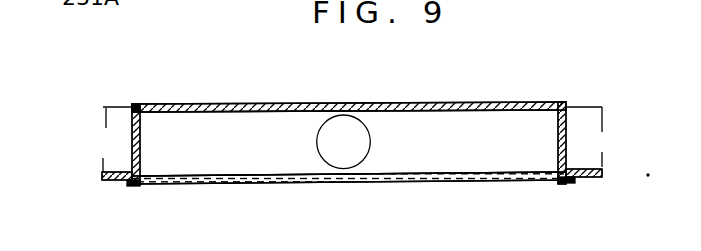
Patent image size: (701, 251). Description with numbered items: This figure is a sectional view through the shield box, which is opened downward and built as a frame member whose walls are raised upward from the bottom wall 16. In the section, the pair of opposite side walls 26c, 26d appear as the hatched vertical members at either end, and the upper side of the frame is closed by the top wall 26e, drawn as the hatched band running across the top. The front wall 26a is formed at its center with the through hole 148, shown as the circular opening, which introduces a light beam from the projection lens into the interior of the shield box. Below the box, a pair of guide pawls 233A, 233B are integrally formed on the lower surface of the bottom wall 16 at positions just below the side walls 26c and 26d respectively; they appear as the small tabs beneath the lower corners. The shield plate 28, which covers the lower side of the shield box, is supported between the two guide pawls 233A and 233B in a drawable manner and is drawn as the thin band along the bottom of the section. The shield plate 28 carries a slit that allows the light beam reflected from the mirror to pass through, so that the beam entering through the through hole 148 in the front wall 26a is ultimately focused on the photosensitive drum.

The front wall 26a is at (178, 126).
The top wall 26e is at (275, 107).
The through hole 148 is at (351, 116).
The side wall 26d is at (566, 118).
The side wall 26c is at (132, 141).
The bottom wall 16 is at (107, 183).
The guide pawl 233A is at (138, 187).
The shield plate 28 is at (362, 183).
The guide pawl 233B is at (566, 184).